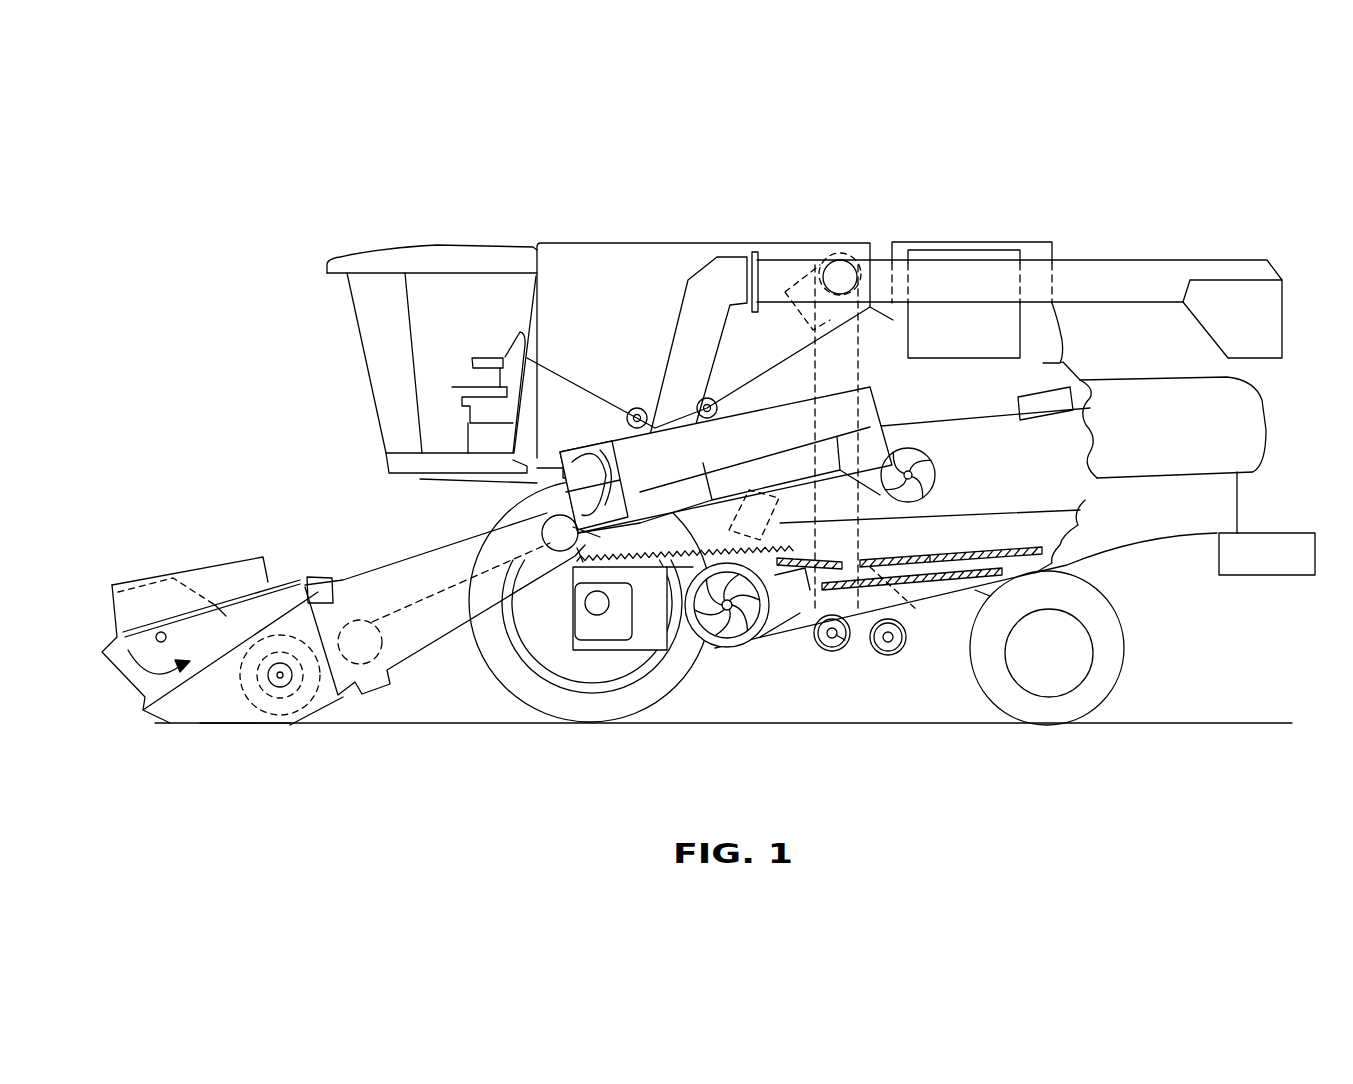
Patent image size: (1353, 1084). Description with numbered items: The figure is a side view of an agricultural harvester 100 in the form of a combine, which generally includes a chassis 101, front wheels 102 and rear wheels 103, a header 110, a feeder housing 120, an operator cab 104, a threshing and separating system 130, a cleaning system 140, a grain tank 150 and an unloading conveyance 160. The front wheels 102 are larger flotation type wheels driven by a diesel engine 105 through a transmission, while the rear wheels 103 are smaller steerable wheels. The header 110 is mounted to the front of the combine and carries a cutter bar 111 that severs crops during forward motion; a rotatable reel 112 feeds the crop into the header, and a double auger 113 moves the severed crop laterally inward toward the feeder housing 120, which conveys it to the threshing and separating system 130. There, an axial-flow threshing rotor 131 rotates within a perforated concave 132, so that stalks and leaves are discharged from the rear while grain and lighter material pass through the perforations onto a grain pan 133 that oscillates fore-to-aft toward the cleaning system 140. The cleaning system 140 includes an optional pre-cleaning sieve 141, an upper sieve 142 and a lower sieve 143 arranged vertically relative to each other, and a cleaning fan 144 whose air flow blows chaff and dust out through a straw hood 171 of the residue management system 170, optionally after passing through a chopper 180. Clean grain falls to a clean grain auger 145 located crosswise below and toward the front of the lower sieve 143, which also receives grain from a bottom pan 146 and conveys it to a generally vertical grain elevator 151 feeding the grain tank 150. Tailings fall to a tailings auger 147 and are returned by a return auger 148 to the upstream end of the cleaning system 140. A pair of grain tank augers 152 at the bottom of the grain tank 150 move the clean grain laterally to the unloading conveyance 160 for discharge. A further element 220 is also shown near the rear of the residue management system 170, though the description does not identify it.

The agricultural harvester 100 is at (423, 225).
The chassis 101 is at (1067, 566).
The front wheels 102 is at (502, 683).
The rear wheels 103 is at (1122, 665).
The operator cab 104 is at (363, 342).
The diesel engine 105 is at (952, 255).
The header 110 is at (190, 538).
The cutter bar 111 is at (227, 715).
The reel 112 is at (108, 630).
The double auger 113 is at (280, 697).
The feeder housing 120 is at (387, 570).
The threshing and separating system 130 is at (495, 497).
The threshing rotor 131 is at (590, 455).
The concave 132 is at (752, 438).
The grain pan 133 is at (575, 572).
The cleaning system 140 is at (790, 680).
The pre-cleaning sieve 141 is at (868, 551).
The upper sieve 142 is at (960, 549).
The lower sieve 143 is at (933, 583).
The cleaning fan 144 is at (735, 650).
The clean grain auger 145 is at (838, 653).
The bottom pan 146 is at (980, 590).
The tailings auger 147 is at (887, 657).
The return auger 148 is at (793, 532).
The grain tank 150 is at (580, 252).
The grain elevator 151 is at (868, 366).
The grain tank augers 152 is at (631, 410).
The unloading conveyance 160 is at (1135, 270).
The residue management system 170 is at (1222, 605).
The straw hood 171 is at (1240, 425).
The chopper 180 is at (1000, 407).
The residue spreader 220 is at (1300, 515).